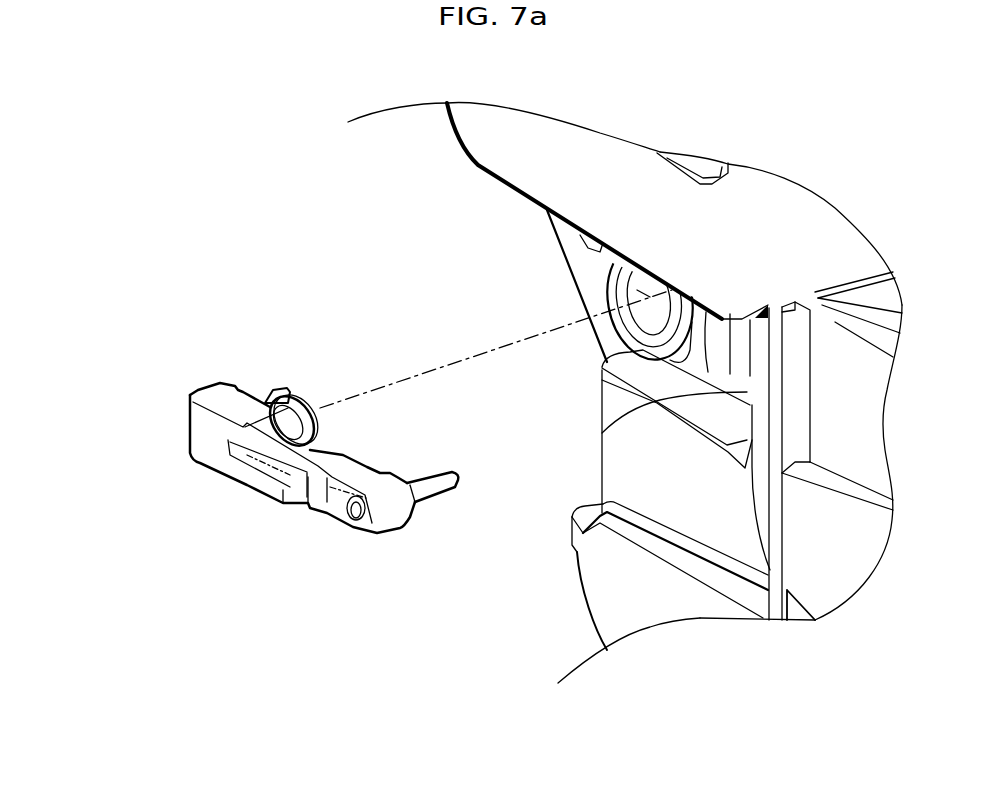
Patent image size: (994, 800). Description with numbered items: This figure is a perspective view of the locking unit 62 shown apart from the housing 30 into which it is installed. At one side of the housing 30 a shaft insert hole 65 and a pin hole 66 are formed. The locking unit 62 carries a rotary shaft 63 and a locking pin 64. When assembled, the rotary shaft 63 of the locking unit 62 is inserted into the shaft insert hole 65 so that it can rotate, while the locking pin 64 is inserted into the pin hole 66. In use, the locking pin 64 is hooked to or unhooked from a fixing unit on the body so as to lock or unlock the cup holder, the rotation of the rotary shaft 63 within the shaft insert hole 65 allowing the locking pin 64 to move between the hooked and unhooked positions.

The housing 30 is at (532, 643).
The locking unit 62 is at (203, 523).
The rotary shaft 63 is at (287, 387).
The locking pin 64 is at (428, 493).
The shaft insert hole 65 is at (617, 302).
The pin hole 66 is at (602, 433).